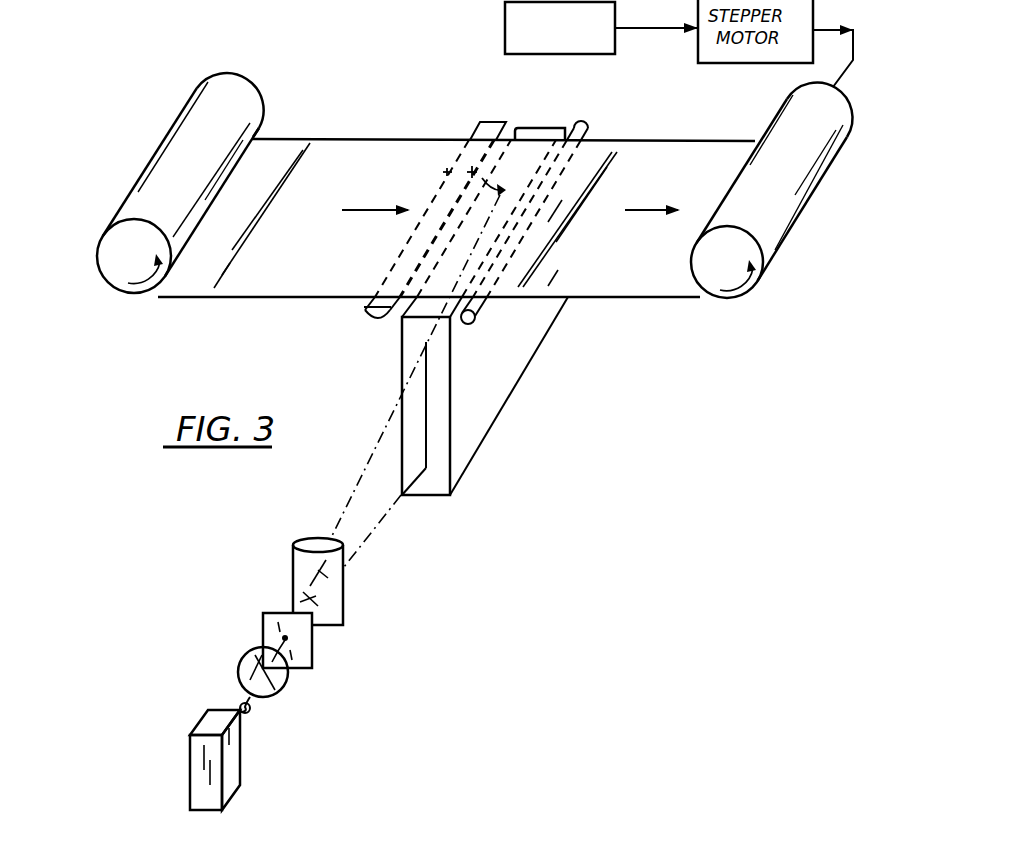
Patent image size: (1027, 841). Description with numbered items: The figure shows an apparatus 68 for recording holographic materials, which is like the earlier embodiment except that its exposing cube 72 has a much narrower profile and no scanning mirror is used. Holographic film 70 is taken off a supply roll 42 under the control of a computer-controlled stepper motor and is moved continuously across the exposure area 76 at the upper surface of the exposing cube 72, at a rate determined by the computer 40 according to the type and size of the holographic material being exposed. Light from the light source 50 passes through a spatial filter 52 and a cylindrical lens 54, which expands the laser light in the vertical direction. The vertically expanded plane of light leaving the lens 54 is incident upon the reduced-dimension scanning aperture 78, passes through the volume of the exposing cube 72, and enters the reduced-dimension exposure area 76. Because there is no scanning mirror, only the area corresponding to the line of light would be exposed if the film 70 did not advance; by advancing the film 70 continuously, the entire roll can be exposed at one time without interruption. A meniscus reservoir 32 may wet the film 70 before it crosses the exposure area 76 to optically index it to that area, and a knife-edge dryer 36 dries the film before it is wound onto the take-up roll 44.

The meniscus reservoir 32 is at (372, 321).
The knife-edge dryer 36 is at (469, 324).
The computer 40 is at (505, 31).
The supply roll 42 is at (103, 238).
The take-up roll 44 is at (731, 300).
The light source 50 is at (206, 718).
The spatial filter 52 is at (252, 650).
The cylindrical lens 54 is at (293, 561).
The apparatus 68 is at (585, 460).
The holographic film 70 is at (356, 146).
The exposing cube 72 is at (531, 128).
The exposure area 76 is at (455, 178).
The scanning aperture 78 is at (427, 455).